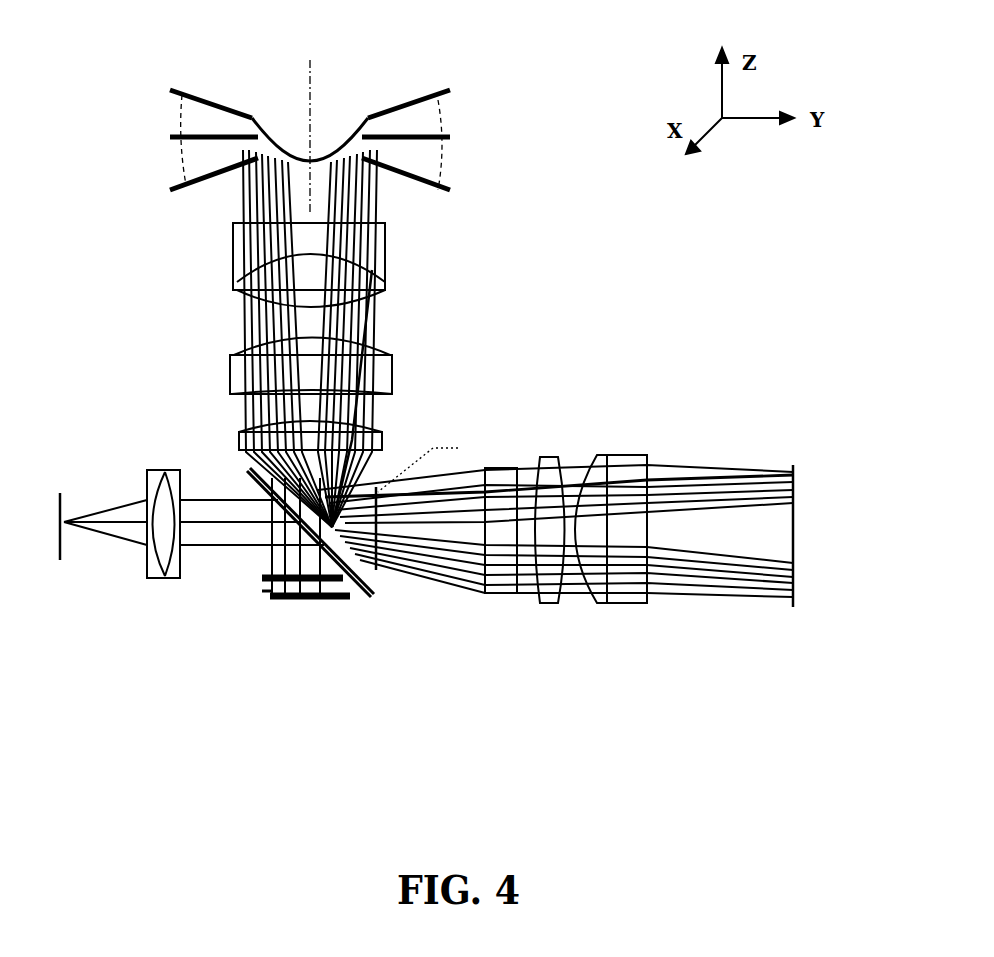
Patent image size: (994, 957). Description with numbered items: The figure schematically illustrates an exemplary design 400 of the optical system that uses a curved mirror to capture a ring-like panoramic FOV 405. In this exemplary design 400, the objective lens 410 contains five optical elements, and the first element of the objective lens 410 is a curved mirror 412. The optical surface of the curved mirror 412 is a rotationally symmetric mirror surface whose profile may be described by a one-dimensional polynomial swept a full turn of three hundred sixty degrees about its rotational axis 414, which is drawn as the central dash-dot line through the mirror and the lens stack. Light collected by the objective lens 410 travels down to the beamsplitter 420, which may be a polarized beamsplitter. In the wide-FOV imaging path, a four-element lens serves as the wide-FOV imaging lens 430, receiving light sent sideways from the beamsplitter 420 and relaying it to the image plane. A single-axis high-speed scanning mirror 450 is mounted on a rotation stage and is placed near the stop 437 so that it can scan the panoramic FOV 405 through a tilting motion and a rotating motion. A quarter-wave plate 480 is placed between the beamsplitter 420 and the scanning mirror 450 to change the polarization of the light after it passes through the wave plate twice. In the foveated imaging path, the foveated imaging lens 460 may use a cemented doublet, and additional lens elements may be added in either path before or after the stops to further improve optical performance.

The exemplary design 400 is at (598, 283).
The ring-like panoramic FOV 405 is at (181, 160).
The objective lens 410 is at (398, 295).
The curved mirror 412 is at (257, 118).
The rotational axis 414 is at (312, 60).
The beamsplitter 420 is at (245, 480).
The wide-FOV imaging lens 430 is at (580, 448).
The stop 437 is at (262, 584).
The scanning mirror 450 is at (315, 605).
The foveated imaging lens 460 is at (160, 580).
The quarter-wave plate 480 is at (352, 585).